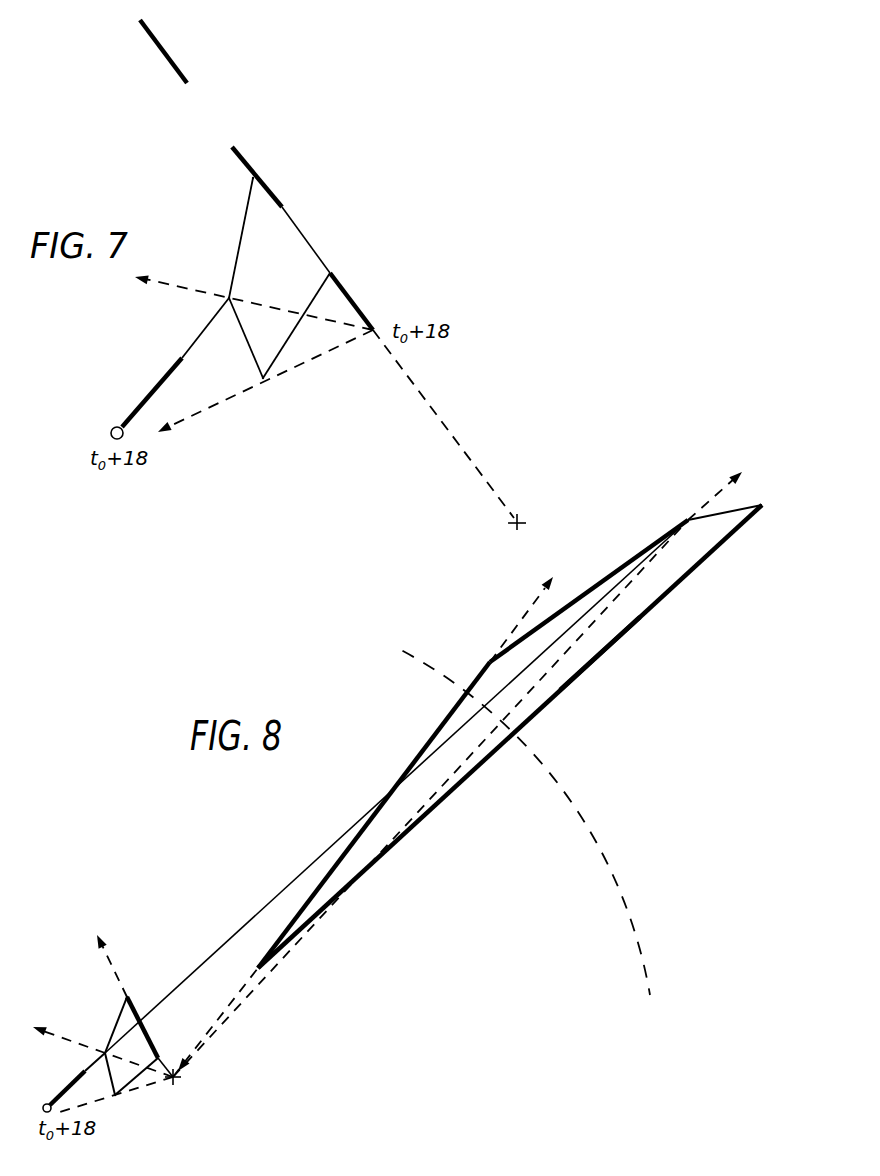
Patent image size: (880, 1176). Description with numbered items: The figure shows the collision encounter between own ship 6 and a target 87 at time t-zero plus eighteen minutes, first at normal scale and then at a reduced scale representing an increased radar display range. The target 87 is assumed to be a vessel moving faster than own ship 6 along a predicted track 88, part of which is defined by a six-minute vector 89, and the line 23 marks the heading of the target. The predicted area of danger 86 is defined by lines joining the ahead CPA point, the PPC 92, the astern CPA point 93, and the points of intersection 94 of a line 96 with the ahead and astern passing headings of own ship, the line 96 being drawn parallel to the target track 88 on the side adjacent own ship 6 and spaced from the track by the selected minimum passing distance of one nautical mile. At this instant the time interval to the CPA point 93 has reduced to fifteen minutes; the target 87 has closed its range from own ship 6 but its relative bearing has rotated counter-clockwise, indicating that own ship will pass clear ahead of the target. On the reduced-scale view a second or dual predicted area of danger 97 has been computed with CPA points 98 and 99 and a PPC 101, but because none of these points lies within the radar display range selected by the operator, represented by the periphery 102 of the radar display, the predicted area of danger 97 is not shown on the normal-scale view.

In FIG. 7, the target ship track line 23 is at (168, 58).
In FIG. 7, the astern CPA point 93 is at (251, 179).
In FIG. 8, the astern CPA point 93 is at (128, 996).
In FIG. 7, the predicted area of danger 86 is at (249, 236).
In FIG. 8, the predicted area of danger 86 is at (124, 1010).
In FIG. 7, the PPC 92 is at (227, 296).
In FIG. 8, the PPC 92 is at (104, 1052).
In FIG. 7, the predicted track 88 is at (196, 333).
In FIG. 8, the predicted track 88 is at (88, 1066).
In FIG. 7, the 6-minute vector 89 is at (155, 383).
In FIG. 8, the 6-minute vector 89 is at (66, 1086).
In FIG. 7, the target 87 is at (111, 427).
In FIG. 8, the target 87 is at (43, 1105).
In FIG. 7, the point of intersection 94 is at (337, 282).
In FIG. 8, the point of intersection 94 is at (161, 1056).
In FIG. 7, the line 96 is at (300, 347).
In FIG. 8, the line 96 is at (150, 1082).
In FIG. 7, the own ship 6 is at (522, 522).
In FIG. 8, the own ship 6 is at (183, 1076).
In FIG. 8, the second predicted area of danger 97 is at (594, 645).
In FIG. 8, the CPA point 98 is at (489, 661).
In FIG. 8, the CPA point 99 is at (763, 507).
In FIG. 8, the PPC 101 is at (687, 519).
In FIG. 8, the periphery of the radar display 102 is at (577, 802).